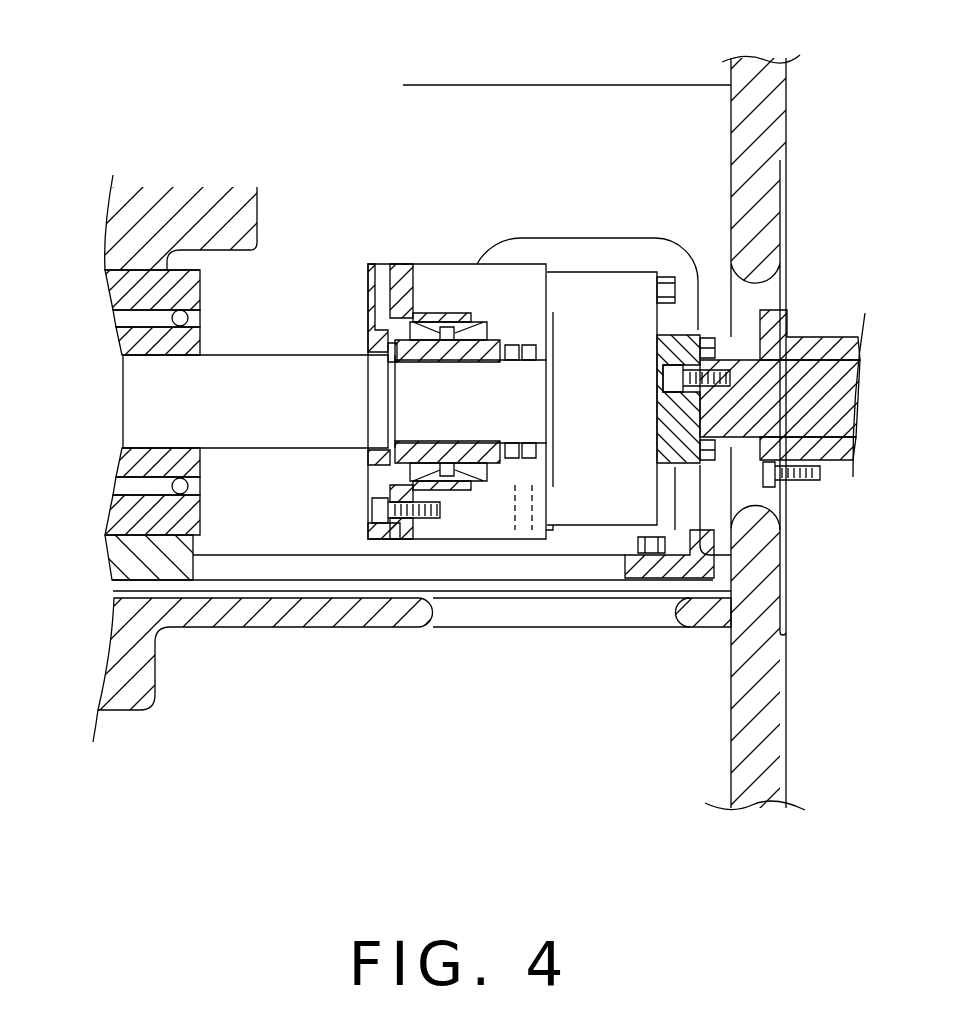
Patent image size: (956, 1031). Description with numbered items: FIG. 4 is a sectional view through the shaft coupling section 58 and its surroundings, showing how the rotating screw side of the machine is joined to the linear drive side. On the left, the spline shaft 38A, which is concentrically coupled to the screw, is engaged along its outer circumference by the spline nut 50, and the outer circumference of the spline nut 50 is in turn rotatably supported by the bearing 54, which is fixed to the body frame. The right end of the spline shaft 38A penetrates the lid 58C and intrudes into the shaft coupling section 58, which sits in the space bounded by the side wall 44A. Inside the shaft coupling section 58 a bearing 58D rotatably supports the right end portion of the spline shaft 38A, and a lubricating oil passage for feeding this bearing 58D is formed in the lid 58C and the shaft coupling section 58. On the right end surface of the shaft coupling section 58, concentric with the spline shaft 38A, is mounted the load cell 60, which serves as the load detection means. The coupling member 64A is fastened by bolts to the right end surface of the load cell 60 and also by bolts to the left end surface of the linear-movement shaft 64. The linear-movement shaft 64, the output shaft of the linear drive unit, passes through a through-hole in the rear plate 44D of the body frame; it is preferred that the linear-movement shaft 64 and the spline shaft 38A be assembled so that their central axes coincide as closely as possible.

The spline shaft 38A is at (152, 395).
The side wall 44A is at (478, 83).
The rear plate 44D is at (767, 99).
The spline nut 50 is at (190, 348).
The bearing 54 is at (190, 294).
The shaft coupling section 58 is at (430, 262).
The lid 58C is at (375, 483).
The bearing 58D is at (450, 320).
The load cell 60 is at (602, 270).
The linear-movement shaft 64 is at (823, 403).
The coupling member 64A is at (668, 352).